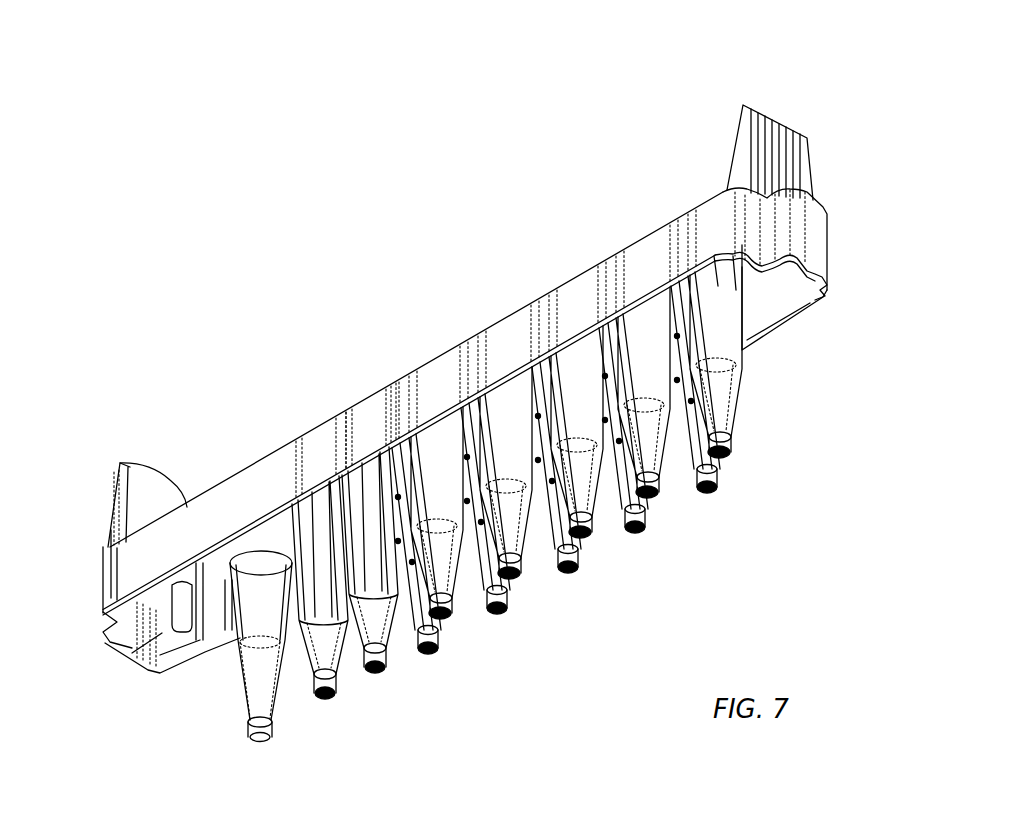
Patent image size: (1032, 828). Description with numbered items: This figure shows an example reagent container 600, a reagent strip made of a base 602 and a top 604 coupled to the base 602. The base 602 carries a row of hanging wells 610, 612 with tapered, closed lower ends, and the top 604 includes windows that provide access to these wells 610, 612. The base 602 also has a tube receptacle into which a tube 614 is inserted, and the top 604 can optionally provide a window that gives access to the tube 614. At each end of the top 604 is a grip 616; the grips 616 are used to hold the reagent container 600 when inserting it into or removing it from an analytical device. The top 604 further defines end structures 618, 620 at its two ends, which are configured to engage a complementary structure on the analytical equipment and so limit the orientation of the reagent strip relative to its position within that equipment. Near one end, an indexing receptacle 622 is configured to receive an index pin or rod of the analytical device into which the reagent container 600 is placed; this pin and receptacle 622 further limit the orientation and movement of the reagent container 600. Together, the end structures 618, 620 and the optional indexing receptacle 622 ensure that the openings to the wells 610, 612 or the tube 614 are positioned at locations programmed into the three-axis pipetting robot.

The reagent container 600 is at (400, 218).
The base 602 is at (765, 358).
The top 604 is at (263, 472).
The well 610 is at (569, 574).
The well 612 is at (336, 702).
The tube 614 is at (248, 722).
The grips 616 is at (758, 112).
The end structure 618 is at (826, 244).
The end structure 620 is at (130, 650).
The indexing receptacle 622 is at (182, 612).